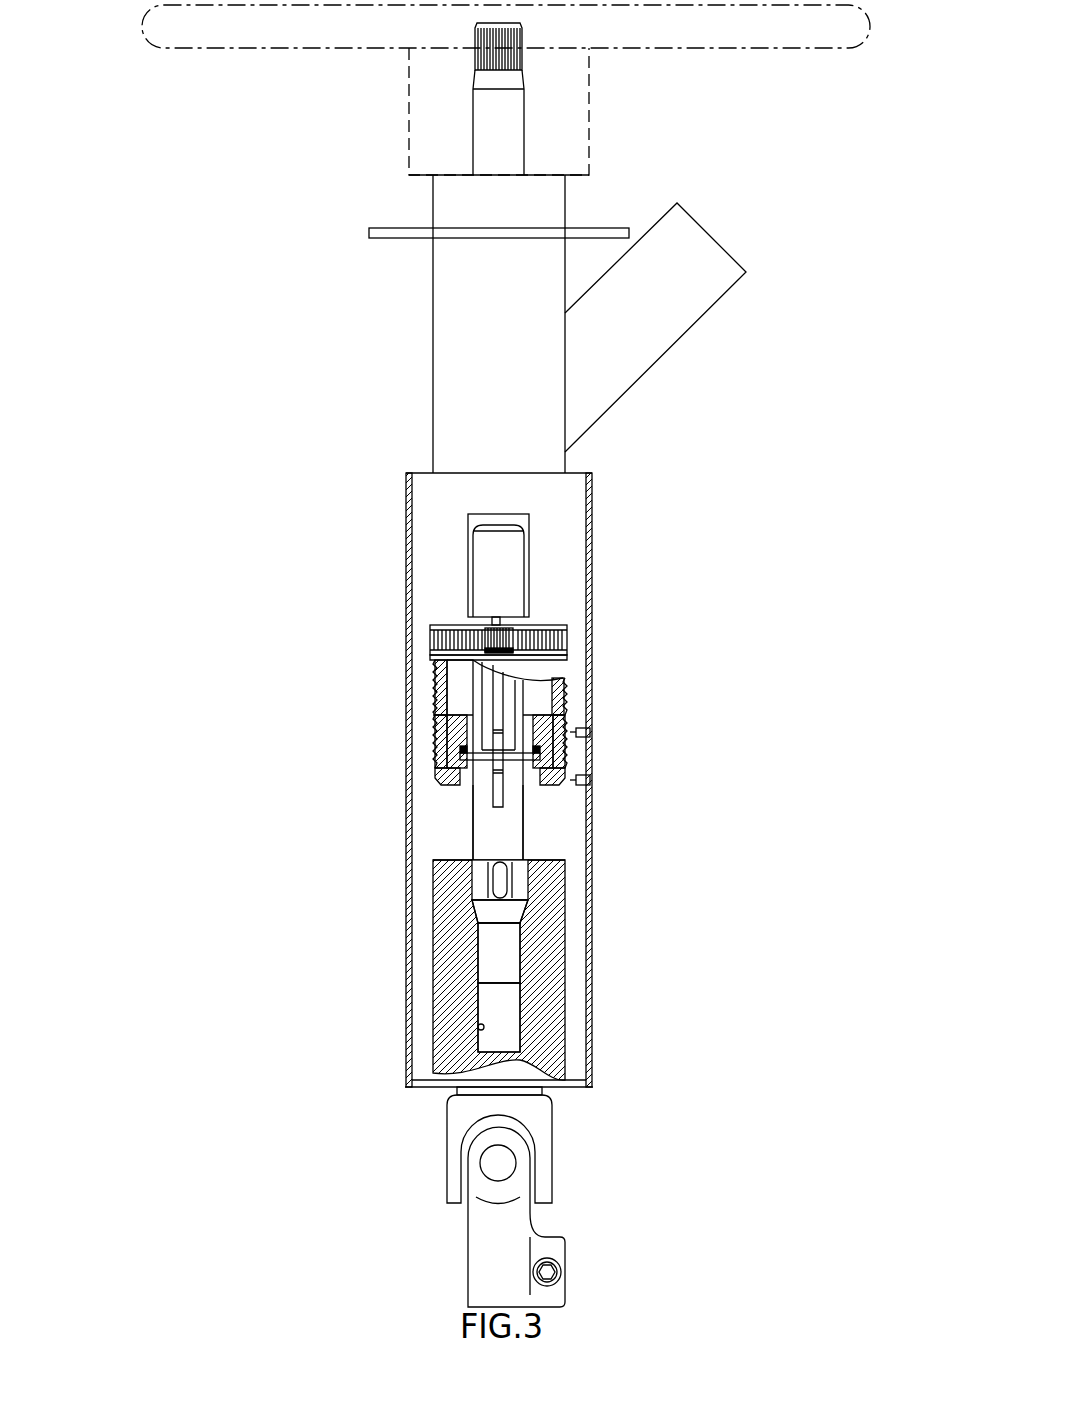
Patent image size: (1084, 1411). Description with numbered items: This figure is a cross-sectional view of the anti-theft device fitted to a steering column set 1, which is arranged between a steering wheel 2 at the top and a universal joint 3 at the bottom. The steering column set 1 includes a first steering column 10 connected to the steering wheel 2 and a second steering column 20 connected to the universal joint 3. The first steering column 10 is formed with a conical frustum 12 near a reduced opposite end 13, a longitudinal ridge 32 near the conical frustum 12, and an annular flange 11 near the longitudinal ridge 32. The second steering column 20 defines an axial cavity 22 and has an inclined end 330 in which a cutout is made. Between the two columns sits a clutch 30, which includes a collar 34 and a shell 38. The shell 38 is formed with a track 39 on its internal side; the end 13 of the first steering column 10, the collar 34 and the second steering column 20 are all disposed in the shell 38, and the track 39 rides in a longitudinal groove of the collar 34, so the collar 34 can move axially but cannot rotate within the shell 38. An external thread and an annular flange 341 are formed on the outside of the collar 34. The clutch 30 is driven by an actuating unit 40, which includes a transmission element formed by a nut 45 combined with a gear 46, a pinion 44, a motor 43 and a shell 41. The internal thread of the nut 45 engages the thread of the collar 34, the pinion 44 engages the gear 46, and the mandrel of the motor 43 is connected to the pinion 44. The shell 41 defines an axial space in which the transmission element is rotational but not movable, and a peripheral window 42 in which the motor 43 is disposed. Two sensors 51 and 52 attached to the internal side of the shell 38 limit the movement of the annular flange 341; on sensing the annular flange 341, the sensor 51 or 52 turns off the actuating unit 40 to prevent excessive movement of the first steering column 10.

The steering column set 1 is at (528, 153).
The steering wheel 2 is at (748, 55).
The universal joint 3 is at (466, 1262).
The first steering column 10 is at (482, 732).
The annular flange 11 is at (480, 757).
The conical frustum 12 is at (498, 912).
The reduced opposite end 13 is at (493, 965).
The second steering column 20 is at (556, 1003).
The axial cavity 22 is at (478, 1027).
The clutch 30 is at (434, 755).
The longitudinal ridge 32 is at (500, 882).
The collar 34 is at (563, 723).
The shell 38 is at (590, 868).
The track 39 is at (503, 797).
The actuating unit 40 is at (386, 568).
The shell 41 is at (592, 503).
The peripheral window 42 is at (468, 527).
The motor 43 is at (507, 567).
The pinion 44 is at (510, 636).
The nut 45 is at (437, 680).
The gear 46 is at (440, 637).
The sensor 51 is at (592, 779).
The sensor 52 is at (592, 730).
The inclined end 330 is at (445, 856).
The annular flange 341 is at (437, 774).